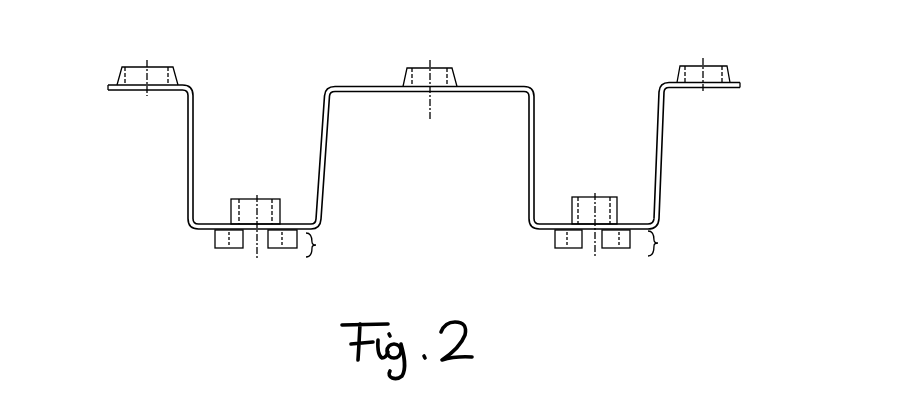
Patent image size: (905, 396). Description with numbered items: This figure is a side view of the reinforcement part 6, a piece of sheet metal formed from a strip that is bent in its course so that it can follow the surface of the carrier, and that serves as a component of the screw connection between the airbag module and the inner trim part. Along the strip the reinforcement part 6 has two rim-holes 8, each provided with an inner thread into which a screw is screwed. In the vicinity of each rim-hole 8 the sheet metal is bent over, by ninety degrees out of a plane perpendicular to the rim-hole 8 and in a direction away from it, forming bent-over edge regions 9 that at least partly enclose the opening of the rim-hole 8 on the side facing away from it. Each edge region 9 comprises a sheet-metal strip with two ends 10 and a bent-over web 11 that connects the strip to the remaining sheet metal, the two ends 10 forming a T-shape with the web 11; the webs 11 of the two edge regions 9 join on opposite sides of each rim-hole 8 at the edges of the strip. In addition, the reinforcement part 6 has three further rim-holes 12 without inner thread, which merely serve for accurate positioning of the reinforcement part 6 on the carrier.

The reinforcement part 6 is at (665, 152).
The rim-hole 8 is at (233, 206).
The bent-over edge region 9 is at (496, 247).
The end of the sheet-metal strip 10 is at (213, 238).
The bent-over web 11 is at (251, 247).
The further rim-hole 12 is at (177, 80).